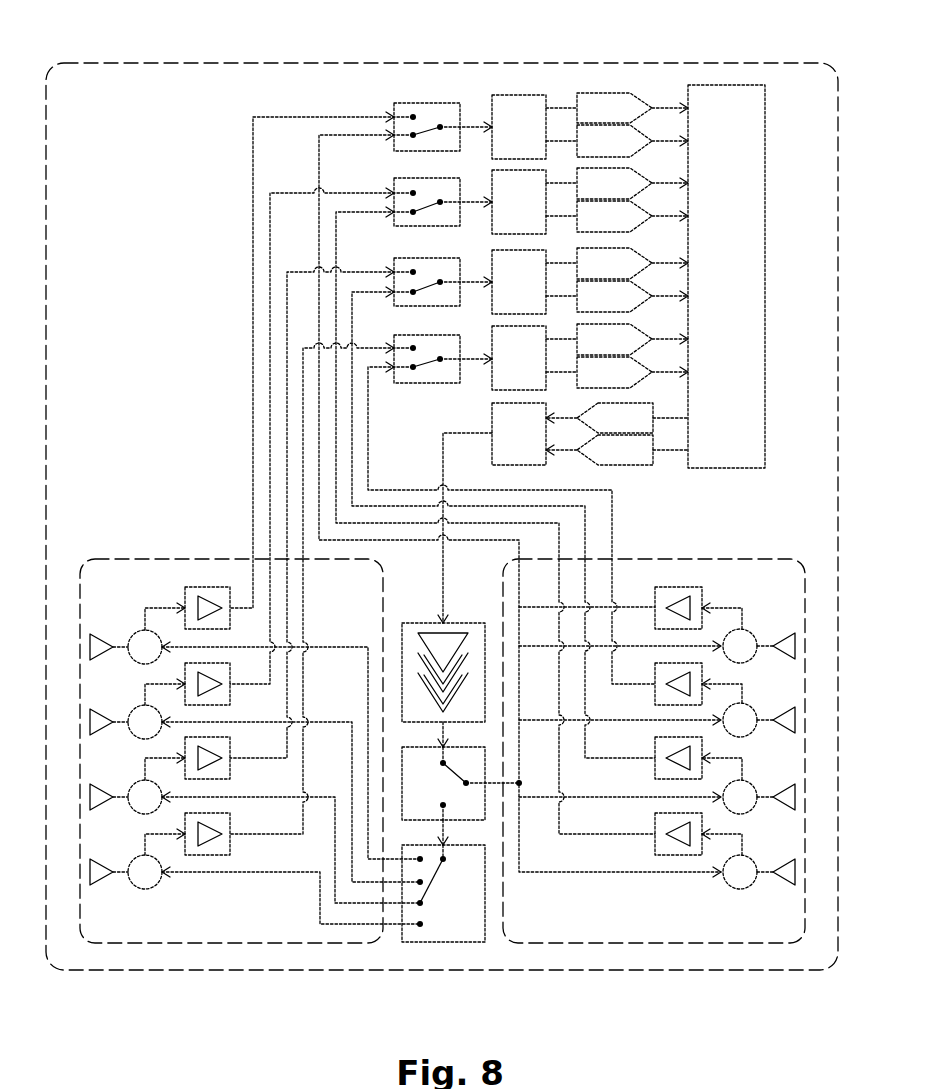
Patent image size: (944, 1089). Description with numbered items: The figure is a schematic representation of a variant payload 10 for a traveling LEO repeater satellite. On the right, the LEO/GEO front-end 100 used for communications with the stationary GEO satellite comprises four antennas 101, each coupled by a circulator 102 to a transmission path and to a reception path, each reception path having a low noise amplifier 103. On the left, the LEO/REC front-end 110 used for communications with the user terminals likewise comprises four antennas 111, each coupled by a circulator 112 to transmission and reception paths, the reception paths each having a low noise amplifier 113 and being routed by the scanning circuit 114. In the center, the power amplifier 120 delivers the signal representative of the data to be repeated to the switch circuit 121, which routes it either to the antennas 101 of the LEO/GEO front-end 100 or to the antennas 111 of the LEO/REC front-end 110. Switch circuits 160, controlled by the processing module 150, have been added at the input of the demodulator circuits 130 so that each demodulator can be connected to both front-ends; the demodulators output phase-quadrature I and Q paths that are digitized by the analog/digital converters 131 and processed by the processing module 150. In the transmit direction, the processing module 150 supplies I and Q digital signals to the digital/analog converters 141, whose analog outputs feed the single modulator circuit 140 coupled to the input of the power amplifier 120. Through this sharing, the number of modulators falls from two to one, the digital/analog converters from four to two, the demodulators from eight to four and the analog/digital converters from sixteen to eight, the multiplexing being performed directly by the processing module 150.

The payload 10 is at (582, 54).
The LEO/GEO front-end 100 is at (638, 943).
The antennas 101 is at (781, 659).
The circulator 102 is at (755, 641).
The low noise amplifier 103 is at (698, 596).
The LEO/REC front-end 110 is at (215, 943).
The antennas 111 is at (102, 718).
The circulator 112 is at (145, 630).
The low noise amplifier 113 is at (188, 597).
The scanning circuit 114 is at (458, 922).
The power amplifier 120 is at (452, 635).
The switch circuit 121 is at (485, 805).
The demodulator circuits 130 is at (503, 138).
The analog/digital converters 131 is at (588, 119).
The modulator circuits 140 is at (503, 444).
The digital/analog converters 141 is at (610, 429).
The processing module 150 is at (711, 274).
The switch circuits 160 is at (432, 104).